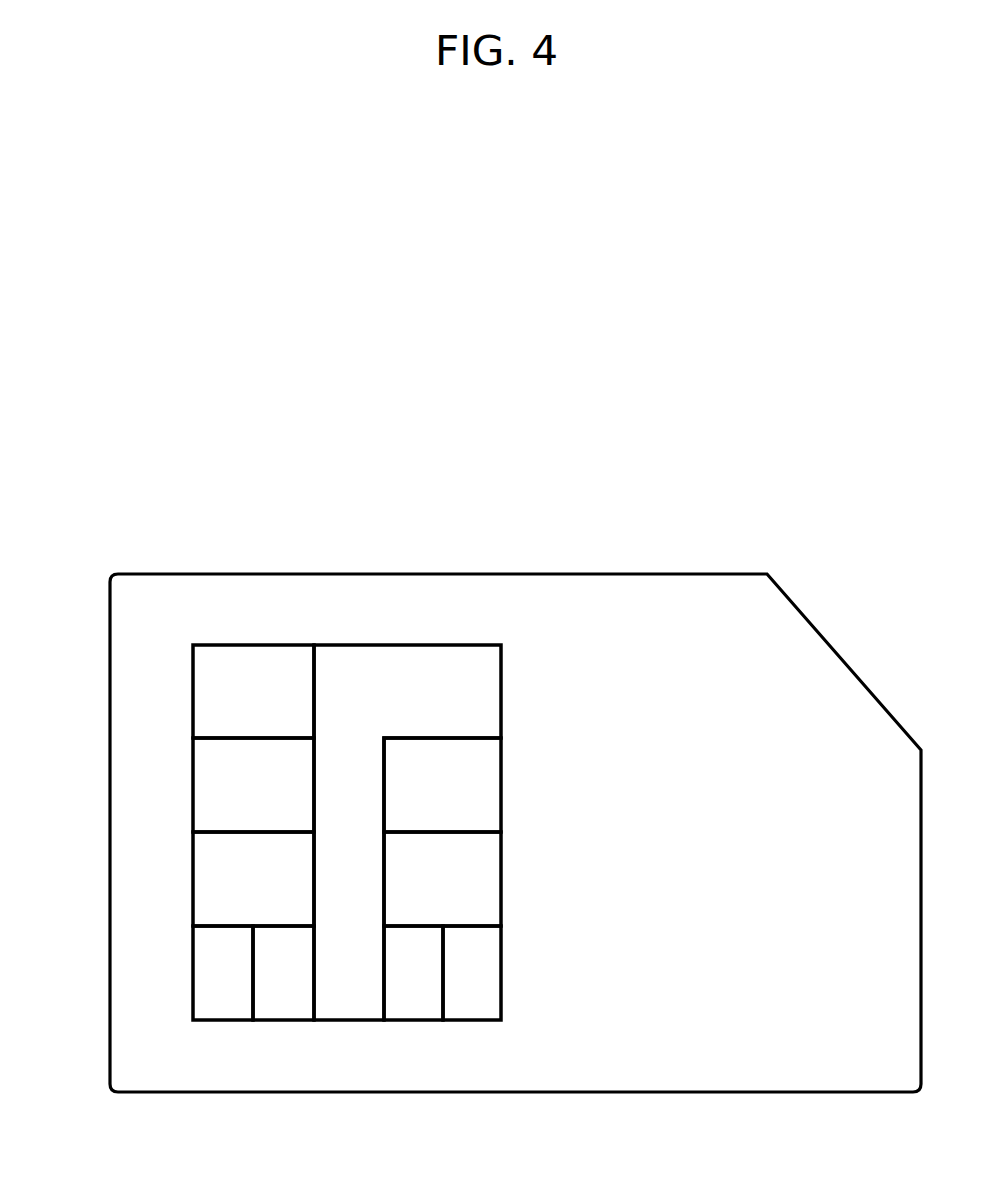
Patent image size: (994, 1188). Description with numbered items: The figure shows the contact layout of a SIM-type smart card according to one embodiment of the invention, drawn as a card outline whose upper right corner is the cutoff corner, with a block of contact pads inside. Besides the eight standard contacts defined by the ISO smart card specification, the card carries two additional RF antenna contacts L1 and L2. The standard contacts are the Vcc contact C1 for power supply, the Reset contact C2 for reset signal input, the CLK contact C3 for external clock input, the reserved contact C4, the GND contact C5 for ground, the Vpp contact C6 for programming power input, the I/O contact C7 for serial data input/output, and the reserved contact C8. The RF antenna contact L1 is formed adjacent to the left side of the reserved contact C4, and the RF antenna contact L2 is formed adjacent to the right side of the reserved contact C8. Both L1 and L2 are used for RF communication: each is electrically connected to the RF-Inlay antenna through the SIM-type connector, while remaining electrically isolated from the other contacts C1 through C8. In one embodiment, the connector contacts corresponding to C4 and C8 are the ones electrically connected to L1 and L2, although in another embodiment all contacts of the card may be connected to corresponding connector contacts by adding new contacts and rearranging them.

The Vcc contact C1 is at (215, 697).
The Reset contact C2 is at (215, 785).
The CLK contact C3 is at (215, 875).
The reserved contact C4 is at (285, 1006).
The GND contact C5 is at (479, 696).
The Vpp contact C6 is at (479, 785).
The I/O contact C7 is at (479, 872).
The reserved contact C8 is at (415, 1006).
The RF antenna contact L1 is at (215, 965).
The RF antenna contact L2 is at (479, 975).